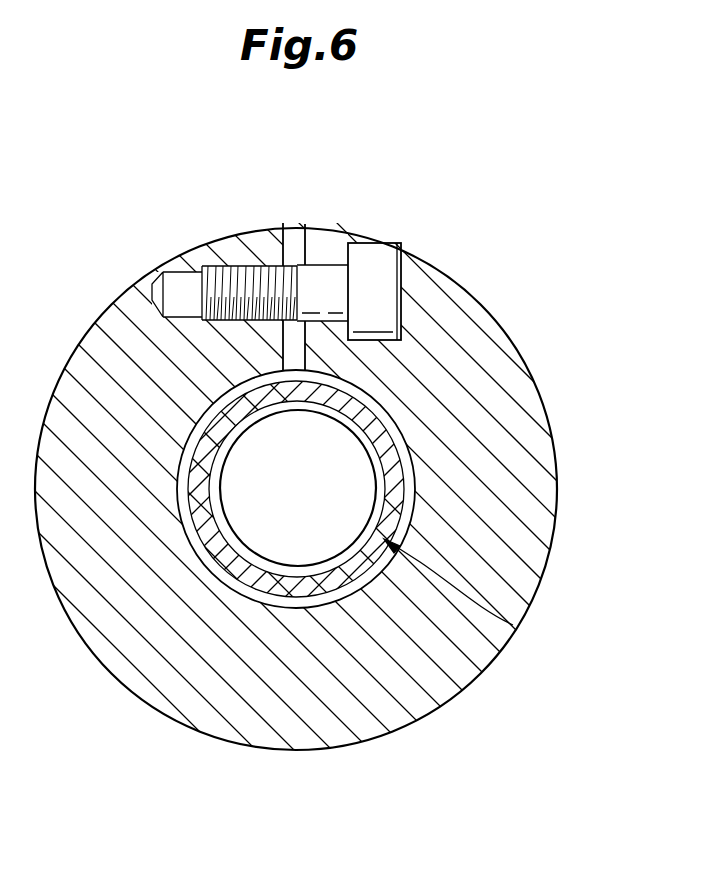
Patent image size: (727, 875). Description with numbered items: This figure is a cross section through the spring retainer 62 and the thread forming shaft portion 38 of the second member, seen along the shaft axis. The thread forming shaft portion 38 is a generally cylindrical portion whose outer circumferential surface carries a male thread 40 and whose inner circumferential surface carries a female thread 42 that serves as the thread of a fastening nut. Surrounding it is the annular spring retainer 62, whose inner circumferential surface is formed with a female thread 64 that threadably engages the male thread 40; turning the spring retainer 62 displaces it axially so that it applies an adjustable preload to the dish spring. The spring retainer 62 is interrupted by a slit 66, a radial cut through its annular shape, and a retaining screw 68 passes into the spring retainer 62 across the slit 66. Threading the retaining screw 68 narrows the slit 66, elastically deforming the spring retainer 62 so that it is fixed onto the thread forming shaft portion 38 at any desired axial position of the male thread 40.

The thread forming shaft portion 38 is at (513, 625).
The male thread 40 is at (407, 484).
The female thread 42 is at (348, 543).
The spring retainer 62 is at (533, 548).
The female thread 64 is at (387, 440).
The slit 66 is at (292, 233).
The retaining screw 68 is at (237, 265).